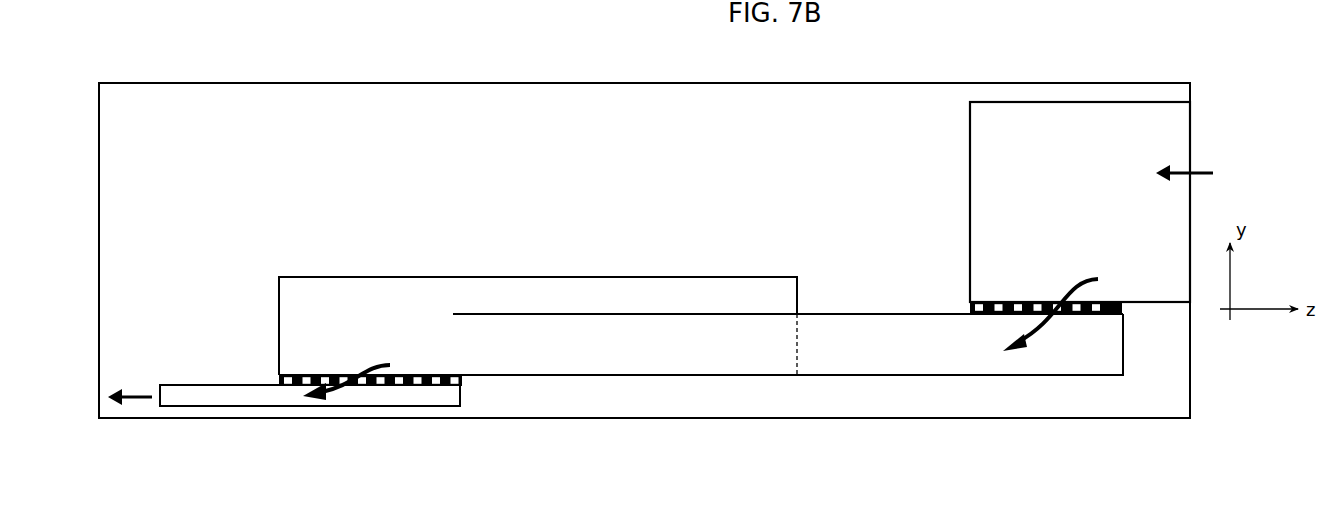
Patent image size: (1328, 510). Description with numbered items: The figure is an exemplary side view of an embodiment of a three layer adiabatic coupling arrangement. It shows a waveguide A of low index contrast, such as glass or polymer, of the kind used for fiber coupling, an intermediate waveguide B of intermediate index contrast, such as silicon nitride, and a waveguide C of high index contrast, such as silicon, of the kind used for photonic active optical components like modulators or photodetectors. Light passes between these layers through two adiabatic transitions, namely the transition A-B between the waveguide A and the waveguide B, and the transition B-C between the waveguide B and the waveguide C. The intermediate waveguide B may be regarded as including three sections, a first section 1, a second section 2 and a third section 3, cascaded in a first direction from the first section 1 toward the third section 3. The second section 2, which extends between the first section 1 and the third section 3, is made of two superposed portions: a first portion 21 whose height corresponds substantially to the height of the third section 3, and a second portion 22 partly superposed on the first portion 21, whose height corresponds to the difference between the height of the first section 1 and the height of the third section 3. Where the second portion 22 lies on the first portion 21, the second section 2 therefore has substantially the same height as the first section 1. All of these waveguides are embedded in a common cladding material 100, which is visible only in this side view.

The common cladding material 100 is at (226, 103).
The first section 1 is at (376, 260).
The second section 2 is at (641, 263).
The third section 3 is at (883, 287).
The first portion 21 is at (740, 352).
The second portion 22 is at (722, 292).
The waveguide A is at (1098, 120).
The waveguide B is at (520, 274).
The waveguide C is at (239, 392).
The adiabatic transition A-B is at (1130, 312).
The adiabatic transition B-C is at (470, 380).